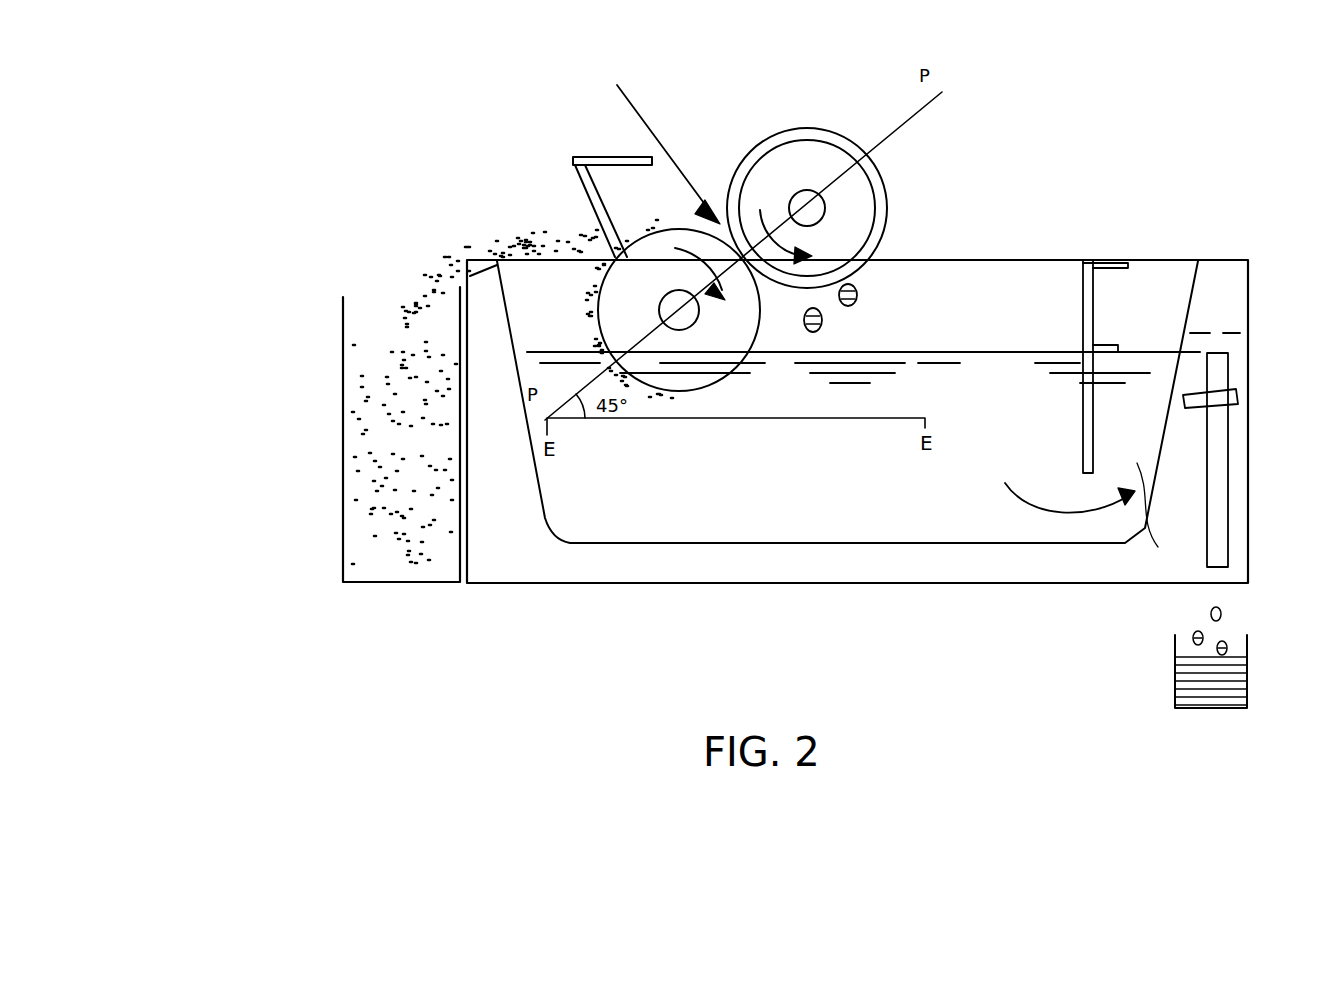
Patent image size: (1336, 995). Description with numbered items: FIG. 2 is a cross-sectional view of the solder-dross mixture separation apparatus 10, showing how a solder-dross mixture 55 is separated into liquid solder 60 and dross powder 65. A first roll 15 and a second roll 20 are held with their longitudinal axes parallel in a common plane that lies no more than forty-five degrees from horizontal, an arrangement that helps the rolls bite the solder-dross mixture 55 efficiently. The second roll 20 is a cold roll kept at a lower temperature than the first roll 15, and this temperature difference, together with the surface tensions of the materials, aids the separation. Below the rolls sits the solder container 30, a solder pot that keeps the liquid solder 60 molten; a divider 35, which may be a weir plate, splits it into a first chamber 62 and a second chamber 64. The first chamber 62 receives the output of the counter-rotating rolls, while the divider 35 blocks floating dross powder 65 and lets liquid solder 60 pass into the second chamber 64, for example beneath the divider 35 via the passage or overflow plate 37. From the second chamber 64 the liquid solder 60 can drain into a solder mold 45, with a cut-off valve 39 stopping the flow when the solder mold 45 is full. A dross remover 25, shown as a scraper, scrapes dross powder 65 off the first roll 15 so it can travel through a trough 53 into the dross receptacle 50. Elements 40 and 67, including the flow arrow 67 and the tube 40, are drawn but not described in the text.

The solder-dross mixture separation apparatus 10 is at (297, 622).
The first roll 15 is at (643, 235).
The second roll 20 is at (812, 128).
The dross remover 25 is at (593, 157).
The solder container 30 is at (525, 584).
The divider 35 is at (1103, 263).
The overflow plate 37 is at (1237, 340).
The cut-off valve 39 is at (1240, 389).
The overflow tube 40 is at (1213, 478).
The solder mold 45 is at (1250, 642).
The dross receptacle 50 is at (342, 313).
The trough 53 is at (473, 282).
The solder-dross mixture 55 is at (657, 142).
The liquid solder 60 is at (858, 296).
The first chamber 62 is at (797, 483).
The second chamber 64 is at (1163, 515).
The dross powder 65 is at (413, 306).
The flow arrow 67 is at (1000, 487).